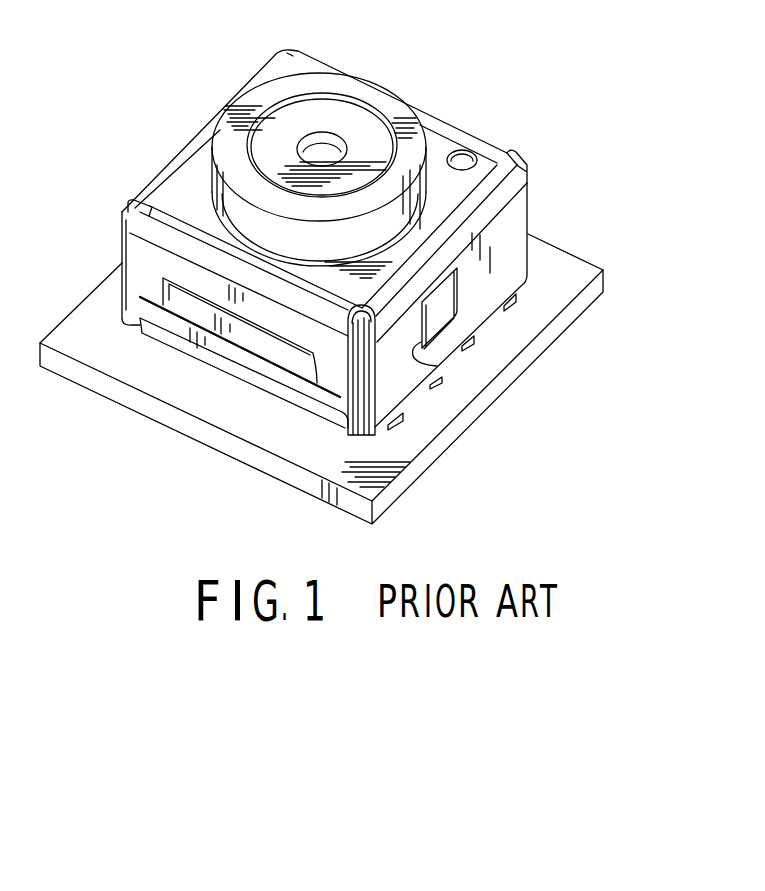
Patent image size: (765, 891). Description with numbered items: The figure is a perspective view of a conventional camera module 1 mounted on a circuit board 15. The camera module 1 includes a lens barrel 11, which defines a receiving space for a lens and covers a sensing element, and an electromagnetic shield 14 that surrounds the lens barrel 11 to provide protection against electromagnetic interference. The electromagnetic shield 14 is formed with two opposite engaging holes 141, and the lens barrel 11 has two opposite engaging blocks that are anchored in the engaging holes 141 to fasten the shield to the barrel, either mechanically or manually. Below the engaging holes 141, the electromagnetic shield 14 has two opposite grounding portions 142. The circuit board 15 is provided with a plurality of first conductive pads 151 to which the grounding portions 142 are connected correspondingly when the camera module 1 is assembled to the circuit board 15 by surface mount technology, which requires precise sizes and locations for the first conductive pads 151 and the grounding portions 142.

The camera module 1 is at (462, 80).
The lens barrel 11 is at (418, 193).
The electromagnetic shield 14 is at (517, 210).
The circuit board 15 is at (231, 413).
The engaging holes 141 is at (418, 344).
The grounding portions 142 is at (477, 327).
The first conductive pads 151 is at (513, 300).